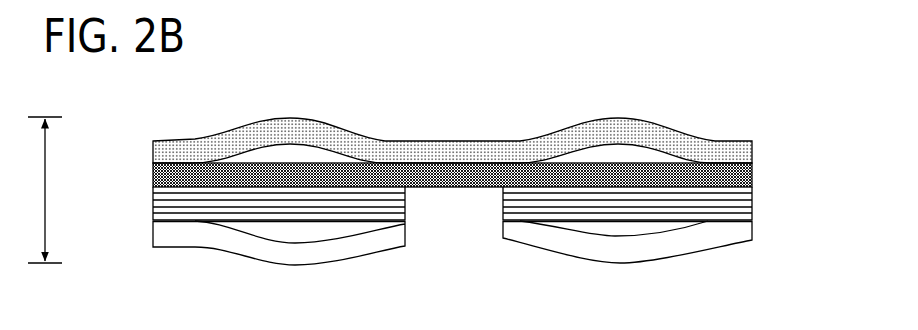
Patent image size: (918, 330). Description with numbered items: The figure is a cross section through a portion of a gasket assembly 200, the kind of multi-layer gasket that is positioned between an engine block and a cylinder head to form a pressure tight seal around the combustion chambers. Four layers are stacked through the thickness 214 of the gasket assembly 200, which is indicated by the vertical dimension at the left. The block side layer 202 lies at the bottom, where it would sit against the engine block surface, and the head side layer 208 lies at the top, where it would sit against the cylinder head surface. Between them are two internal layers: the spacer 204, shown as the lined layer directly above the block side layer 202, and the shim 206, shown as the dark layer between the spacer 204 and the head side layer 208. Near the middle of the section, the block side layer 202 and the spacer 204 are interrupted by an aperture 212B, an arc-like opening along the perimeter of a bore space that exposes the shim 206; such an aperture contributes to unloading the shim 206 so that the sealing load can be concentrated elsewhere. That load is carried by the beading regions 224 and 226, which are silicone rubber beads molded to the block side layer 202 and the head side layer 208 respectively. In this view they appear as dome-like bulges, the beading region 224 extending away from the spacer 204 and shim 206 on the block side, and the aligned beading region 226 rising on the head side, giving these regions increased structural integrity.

The gasket assembly 200 is at (604, 31).
The block side layer 202 is at (151, 230).
The spacer 204 is at (151, 203).
The shim 206 is at (754, 177).
The head side layer 208 is at (754, 151).
The aperture 212B is at (446, 274).
The thickness 214 is at (47, 170).
The beading region 224 is at (296, 104).
The beading region 226 is at (624, 104).